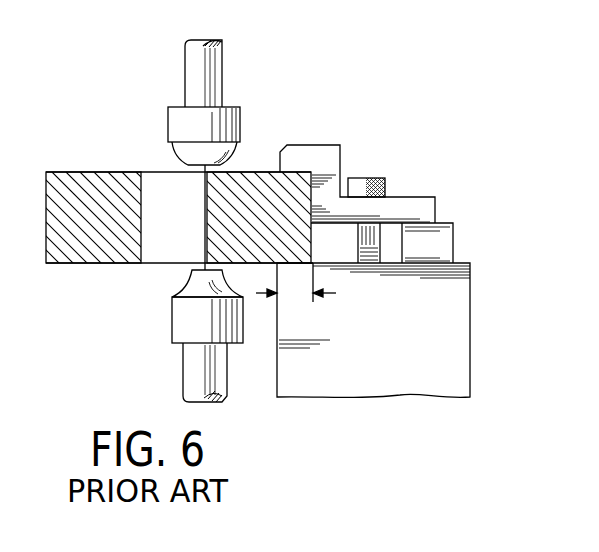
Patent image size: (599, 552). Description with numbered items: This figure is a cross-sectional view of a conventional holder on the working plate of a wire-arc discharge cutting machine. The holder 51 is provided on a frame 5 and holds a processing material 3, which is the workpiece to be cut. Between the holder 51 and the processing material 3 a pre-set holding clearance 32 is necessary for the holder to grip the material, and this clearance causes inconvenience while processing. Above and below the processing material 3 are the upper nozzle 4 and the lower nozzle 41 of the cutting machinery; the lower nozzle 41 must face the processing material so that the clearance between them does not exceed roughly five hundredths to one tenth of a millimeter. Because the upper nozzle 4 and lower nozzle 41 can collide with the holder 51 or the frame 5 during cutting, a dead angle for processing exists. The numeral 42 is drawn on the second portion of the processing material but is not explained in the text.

The processing material 3 is at (96, 191).
The second plate member 42 is at (207, 197).
The upper nozzle 4 is at (232, 108).
The lower nozzle 41 is at (192, 362).
The frame 5 is at (458, 318).
The holder 51 is at (335, 153).
The holding clearance 32 is at (296, 286).